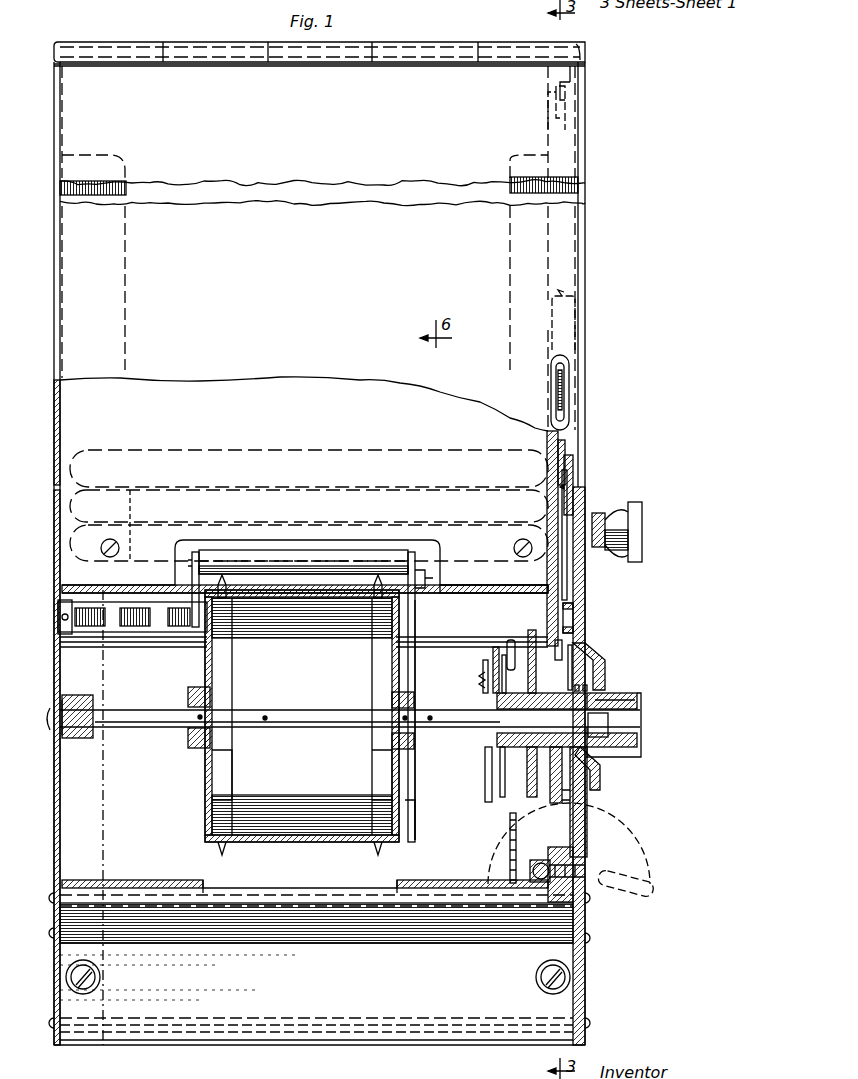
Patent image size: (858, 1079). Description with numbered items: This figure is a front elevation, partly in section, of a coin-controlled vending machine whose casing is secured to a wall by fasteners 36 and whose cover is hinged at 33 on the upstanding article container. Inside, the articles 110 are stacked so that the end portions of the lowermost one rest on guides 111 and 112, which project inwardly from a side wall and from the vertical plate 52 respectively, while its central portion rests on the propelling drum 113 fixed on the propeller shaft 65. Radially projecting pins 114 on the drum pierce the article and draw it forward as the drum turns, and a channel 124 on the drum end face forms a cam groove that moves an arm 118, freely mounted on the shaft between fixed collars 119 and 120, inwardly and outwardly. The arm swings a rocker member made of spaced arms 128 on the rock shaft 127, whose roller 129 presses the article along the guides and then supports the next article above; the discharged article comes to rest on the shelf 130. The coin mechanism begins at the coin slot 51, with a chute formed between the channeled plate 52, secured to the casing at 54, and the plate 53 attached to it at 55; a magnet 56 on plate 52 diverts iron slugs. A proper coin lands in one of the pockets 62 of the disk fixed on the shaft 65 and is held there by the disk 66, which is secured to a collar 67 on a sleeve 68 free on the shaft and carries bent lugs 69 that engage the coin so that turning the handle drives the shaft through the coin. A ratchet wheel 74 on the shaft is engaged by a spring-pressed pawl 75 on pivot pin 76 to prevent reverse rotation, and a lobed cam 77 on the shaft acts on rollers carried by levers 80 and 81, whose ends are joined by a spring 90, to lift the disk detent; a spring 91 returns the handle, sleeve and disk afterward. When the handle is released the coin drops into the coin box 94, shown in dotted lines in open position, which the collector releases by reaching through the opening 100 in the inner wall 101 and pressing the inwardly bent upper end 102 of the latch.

The hinge 33 is at (588, 55).
The fasteners 36 is at (66, 977).
The coin slot 51 is at (572, 410).
The vertical plate 52 is at (590, 560).
The vertical plate 53 is at (565, 525).
The attachment point 54 is at (588, 870).
The attachment point 55 is at (562, 470).
The magnet 56 is at (571, 495).
The pockets 62 is at (560, 797).
The propeller shaft 65 is at (298, 727).
The disk 66 is at (597, 668).
The collar 67 is at (597, 778).
The sleeve 68 is at (642, 745).
The peripheral flanges or lugs 69 is at (563, 650).
The ratchet wheel 74 is at (503, 800).
The spring-pressed pawl 75 is at (575, 618).
The pivot pin 76 is at (505, 660).
The lobed cam 77 is at (486, 802).
The lever 80 is at (508, 830).
The lever 81 is at (484, 665).
The spring 90 is at (482, 695).
The spring 91 is at (588, 681).
The coin box 94 is at (525, 862).
The opening 100 is at (588, 250).
The inner wall 101 is at (548, 142).
The inwardly bent upper end 102 is at (578, 292).
The articles 110 is at (312, 500).
The guide 111 is at (150, 585).
The guide 112 is at (446, 590).
The propelling drum 113 is at (212, 668).
The radially projecting pins 114 is at (360, 583).
The arm 118 is at (418, 666).
The fixed collar 119 is at (418, 752).
The fixed collar 120 is at (392, 690).
The channel 124 is at (413, 820).
The rock shaft 127 is at (90, 620).
The spaced arms 128 is at (222, 580).
The roller 129 is at (290, 556).
The shelf 130 is at (312, 1016).